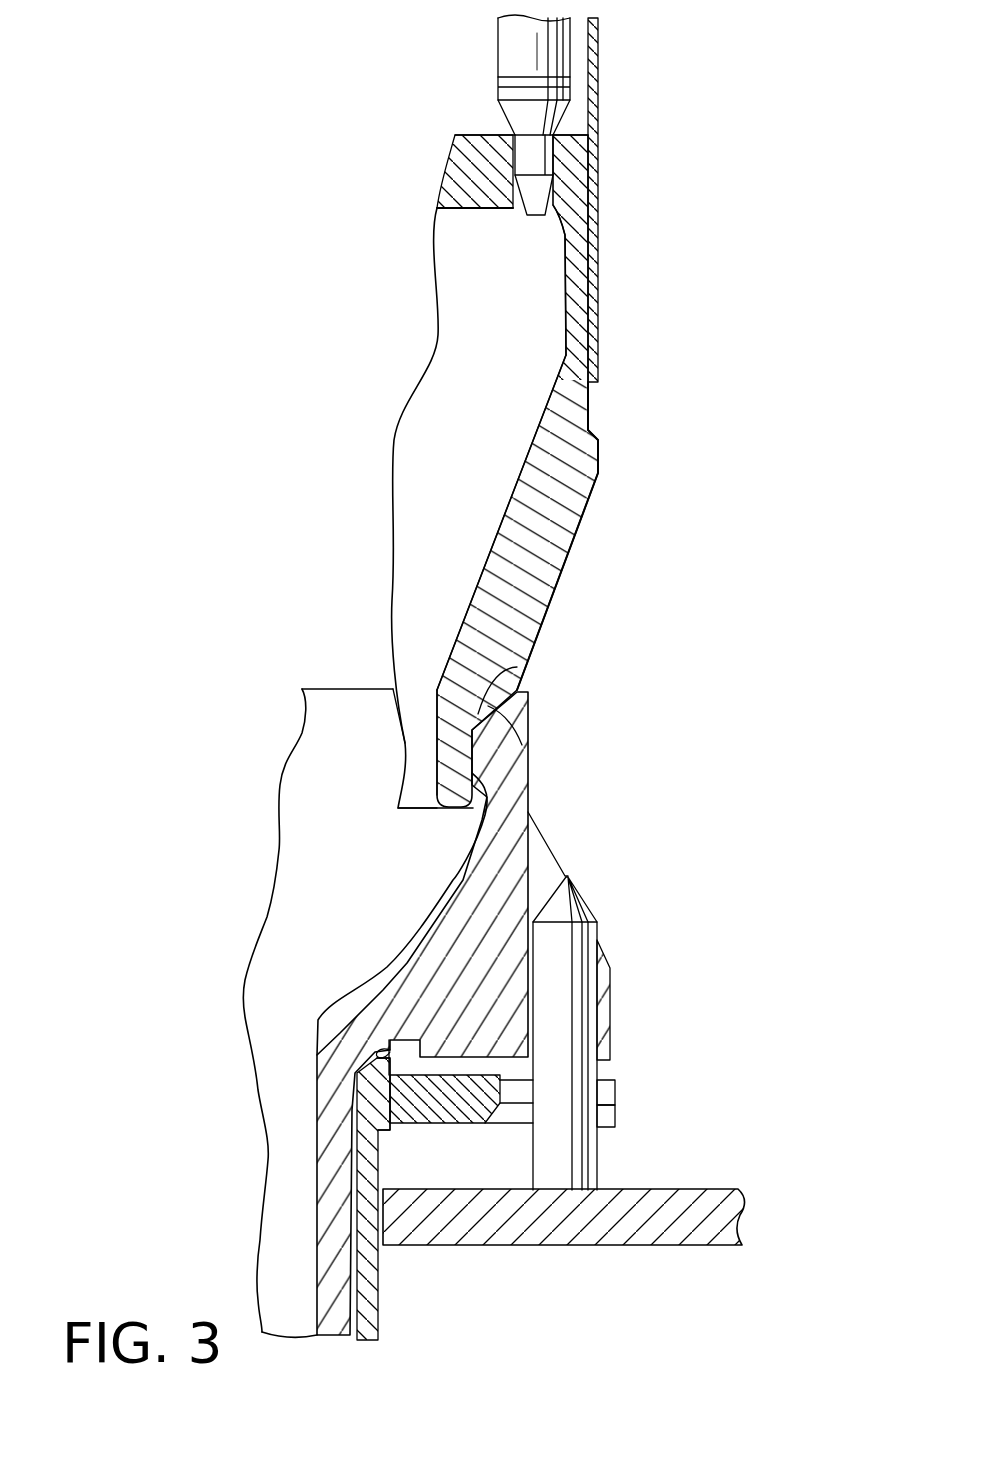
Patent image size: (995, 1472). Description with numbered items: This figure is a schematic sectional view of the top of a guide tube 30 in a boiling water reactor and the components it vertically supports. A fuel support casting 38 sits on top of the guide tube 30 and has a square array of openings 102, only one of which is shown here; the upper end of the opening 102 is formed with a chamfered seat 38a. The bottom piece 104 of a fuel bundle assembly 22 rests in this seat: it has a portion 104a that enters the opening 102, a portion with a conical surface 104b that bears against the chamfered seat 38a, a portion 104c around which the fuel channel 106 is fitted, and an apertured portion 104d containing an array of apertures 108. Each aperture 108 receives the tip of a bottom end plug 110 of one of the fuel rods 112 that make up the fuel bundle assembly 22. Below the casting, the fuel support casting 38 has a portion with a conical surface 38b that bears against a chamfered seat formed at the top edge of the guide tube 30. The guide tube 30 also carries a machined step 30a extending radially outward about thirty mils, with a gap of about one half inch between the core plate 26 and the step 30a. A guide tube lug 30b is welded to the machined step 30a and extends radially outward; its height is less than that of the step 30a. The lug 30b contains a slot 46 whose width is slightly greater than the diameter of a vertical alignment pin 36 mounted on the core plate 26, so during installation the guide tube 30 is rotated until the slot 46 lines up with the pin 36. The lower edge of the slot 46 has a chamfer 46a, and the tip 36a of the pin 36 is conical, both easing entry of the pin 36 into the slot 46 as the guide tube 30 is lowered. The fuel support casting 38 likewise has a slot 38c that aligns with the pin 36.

The fuel bundle assembly 22 is at (590, 503).
The core plate 26 is at (668, 1236).
The guide tube 30 is at (372, 1283).
The machined step 30a is at (383, 1138).
The guide tube lug 30b is at (467, 1115).
The vertical alignment pin 36 is at (598, 936).
The tip of pin 36a is at (575, 893).
The fuel support casting 38 is at (528, 813).
The chamfered seat 38a is at (508, 681).
The conical surface 38b is at (378, 1048).
The slot 38c is at (600, 995).
The slot 46 is at (610, 1090).
The chamfer 46a is at (612, 1117).
The opening 102 is at (437, 754).
The bottom piece 104 is at (557, 577).
The portion 104a is at (520, 484).
The conical surface 104b is at (520, 742).
The portion 104c is at (570, 258).
The apertured portion 104d is at (455, 168).
The fuel channel 106 is at (600, 297).
The aperture 108 is at (520, 214).
The bottom end plug 110 is at (548, 166).
The fuel rod 112 is at (498, 40).